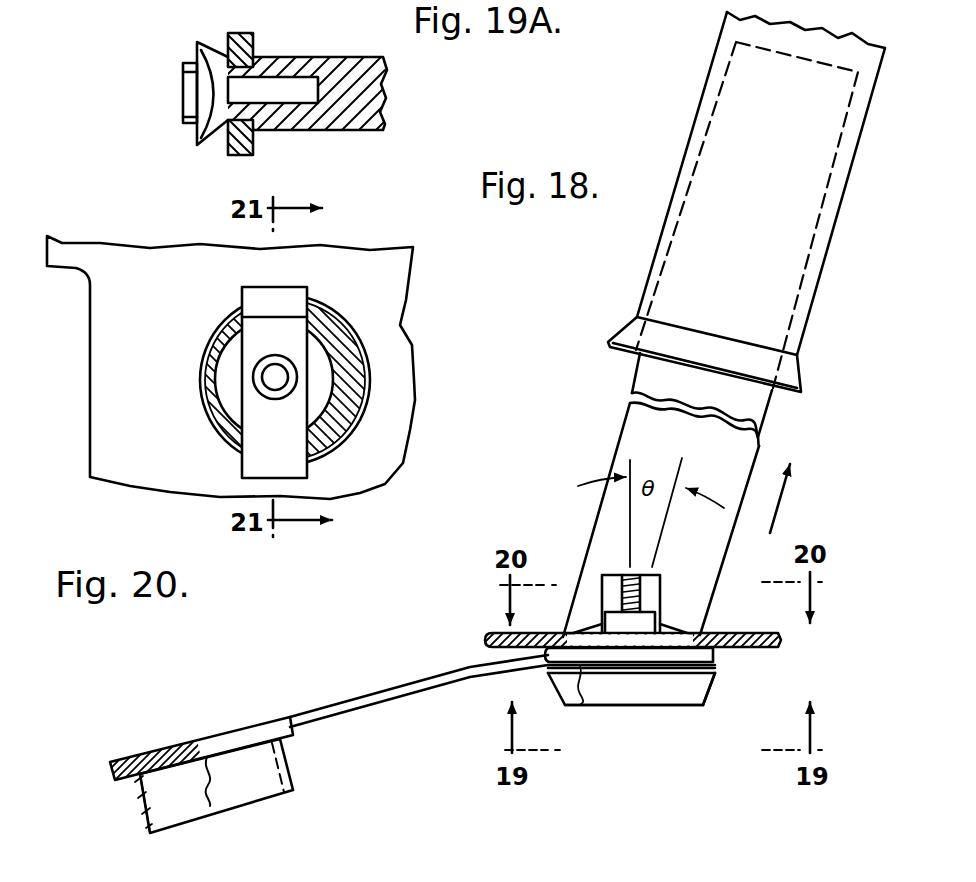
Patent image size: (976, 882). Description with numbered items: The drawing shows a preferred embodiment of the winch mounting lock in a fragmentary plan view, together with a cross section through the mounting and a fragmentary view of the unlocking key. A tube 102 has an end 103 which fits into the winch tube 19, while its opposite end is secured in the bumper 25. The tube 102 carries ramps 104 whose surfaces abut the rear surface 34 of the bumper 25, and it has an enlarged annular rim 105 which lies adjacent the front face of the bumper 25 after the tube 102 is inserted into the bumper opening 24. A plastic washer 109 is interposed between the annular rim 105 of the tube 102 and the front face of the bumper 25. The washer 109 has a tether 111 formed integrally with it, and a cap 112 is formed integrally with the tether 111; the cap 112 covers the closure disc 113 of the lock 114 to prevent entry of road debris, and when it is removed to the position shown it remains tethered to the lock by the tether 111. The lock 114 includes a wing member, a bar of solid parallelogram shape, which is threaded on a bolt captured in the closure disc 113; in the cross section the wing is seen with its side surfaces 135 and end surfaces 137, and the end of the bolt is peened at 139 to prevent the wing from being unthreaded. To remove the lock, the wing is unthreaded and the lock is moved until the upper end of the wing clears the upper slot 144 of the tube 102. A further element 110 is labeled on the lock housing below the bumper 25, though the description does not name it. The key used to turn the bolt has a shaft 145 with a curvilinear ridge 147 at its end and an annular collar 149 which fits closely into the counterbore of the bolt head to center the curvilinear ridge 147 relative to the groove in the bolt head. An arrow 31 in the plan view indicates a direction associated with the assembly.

In FIG. 19A, the shaft 145 is at (337, 131).
In FIG. 19A, the curvilinear ridge 147 is at (183, 113).
In FIG. 19A, the annular collar 149 is at (254, 45).
In FIG. 20, the end surfaces 137 is at (300, 290).
In FIG. 20, the tube 102 is at (358, 340).
In FIG. 18, the tube 102 is at (626, 406).
In FIG. 20, the peened end of bolt 139 is at (262, 368).
In FIG. 20, the side surfaces 135 is at (236, 466).
In FIG. 18, the end of tube 103 is at (734, 92).
In FIG. 18, the winch tube 19 is at (836, 227).
In FIG. 18, the direction of movement 31 is at (780, 502).
In FIG. 18, the ramps 104 is at (582, 630).
In FIG. 18, the upper slot 144 is at (658, 575).
In FIG. 18, the bumper 25 is at (778, 641).
In FIG. 18, the rear surface of bumper 34 is at (504, 633).
In FIG. 18, the annular rim 105 is at (720, 656).
In FIG. 18, the bumper opening 24 is at (703, 700).
In FIG. 18, the housing wall 110 is at (582, 705).
In FIG. 18, the closure disc 113 is at (622, 692).
In FIG. 18, the lock 114 is at (660, 705).
In FIG. 18, the plastic washer 109 is at (545, 660).
In FIG. 18, the tether 111 is at (338, 718).
In FIG. 18, the cap 112 is at (156, 765).